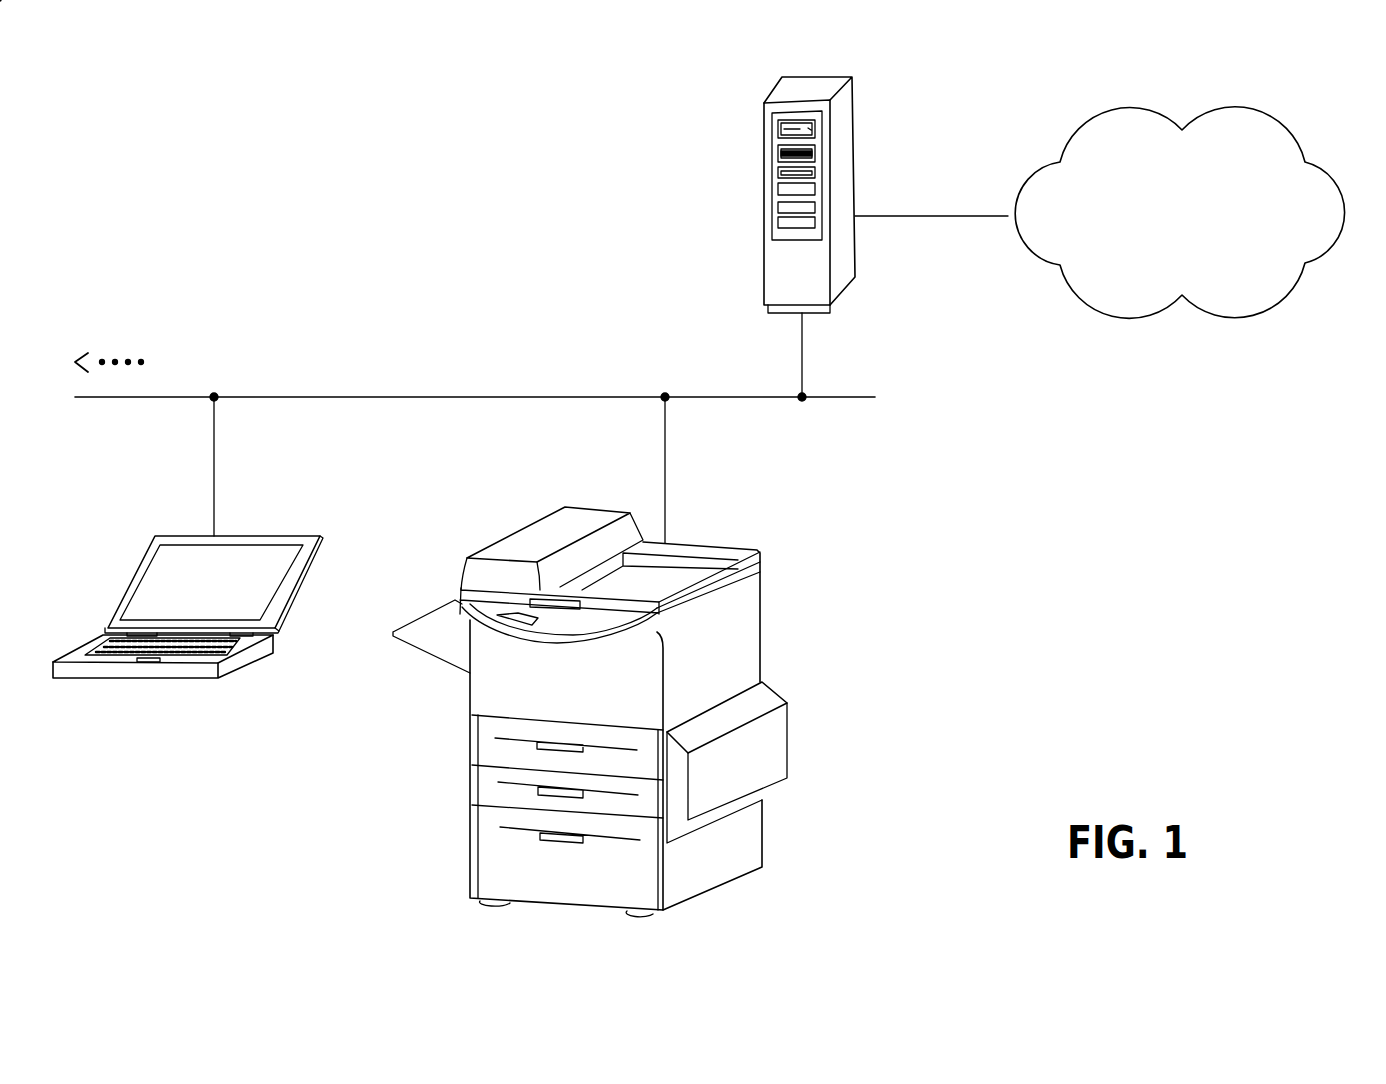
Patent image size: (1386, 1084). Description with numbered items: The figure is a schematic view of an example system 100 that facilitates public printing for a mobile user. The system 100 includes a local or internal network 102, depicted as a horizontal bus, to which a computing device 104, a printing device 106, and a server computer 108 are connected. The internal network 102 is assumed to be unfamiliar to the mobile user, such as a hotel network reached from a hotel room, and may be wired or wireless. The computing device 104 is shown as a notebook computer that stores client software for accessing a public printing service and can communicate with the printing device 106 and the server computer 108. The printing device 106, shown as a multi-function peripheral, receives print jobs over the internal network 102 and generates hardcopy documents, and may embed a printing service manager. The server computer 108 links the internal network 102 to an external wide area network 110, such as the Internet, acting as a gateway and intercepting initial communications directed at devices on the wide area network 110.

The system 100 is at (1085, 565).
The internal network 102 is at (457, 272).
The computing device 104 is at (243, 658).
The printing device 106 is at (747, 843).
The server computer 108 is at (845, 260).
The wide area network 110 is at (1200, 251).